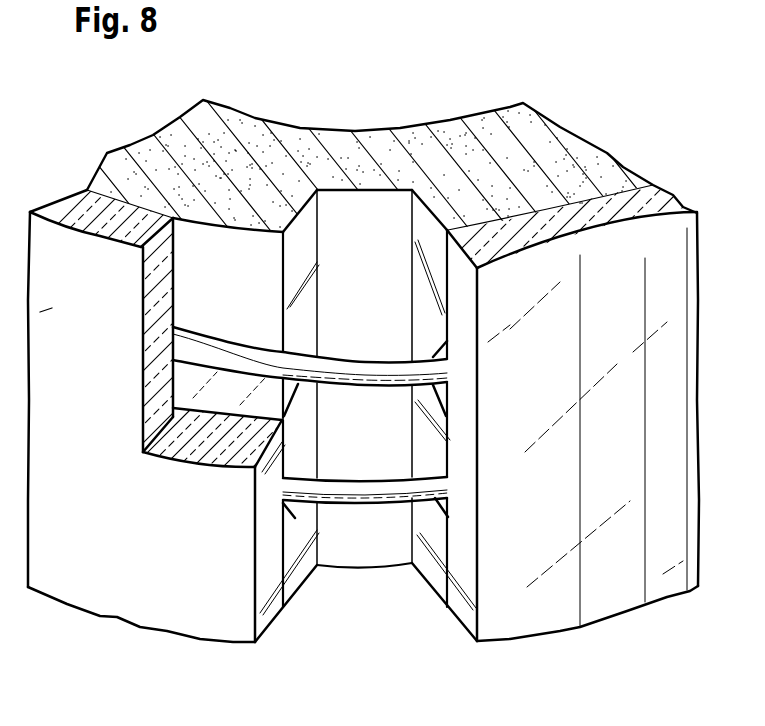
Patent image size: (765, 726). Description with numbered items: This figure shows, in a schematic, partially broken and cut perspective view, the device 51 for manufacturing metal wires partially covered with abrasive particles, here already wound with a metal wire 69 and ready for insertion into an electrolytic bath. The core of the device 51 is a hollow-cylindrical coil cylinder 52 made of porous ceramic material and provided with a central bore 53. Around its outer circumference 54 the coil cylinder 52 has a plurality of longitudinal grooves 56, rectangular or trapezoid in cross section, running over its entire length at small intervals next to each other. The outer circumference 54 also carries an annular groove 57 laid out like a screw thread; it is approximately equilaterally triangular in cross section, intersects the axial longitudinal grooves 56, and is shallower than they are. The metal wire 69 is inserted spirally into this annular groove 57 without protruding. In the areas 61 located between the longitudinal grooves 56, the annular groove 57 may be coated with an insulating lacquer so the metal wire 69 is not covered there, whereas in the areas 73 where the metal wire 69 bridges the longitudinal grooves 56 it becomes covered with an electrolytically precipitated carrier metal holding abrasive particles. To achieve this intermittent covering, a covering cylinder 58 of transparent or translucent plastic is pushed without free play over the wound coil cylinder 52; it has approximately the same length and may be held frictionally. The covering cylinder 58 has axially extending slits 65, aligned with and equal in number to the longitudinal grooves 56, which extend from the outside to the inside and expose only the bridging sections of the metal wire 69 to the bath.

The device 51 is at (518, 82).
The coil cylinder 52 is at (540, 147).
The central bore 53 is at (448, 120).
The outer circumference 54 is at (234, 243).
The longitudinal grooves 56 is at (370, 214).
The annular groove 57 is at (293, 423).
The covering cylinder 58 is at (76, 212).
The areas between the axial longitudinal grooves 61 is at (279, 344).
The slits 65 is at (468, 617).
The metal wire 69 is at (386, 356).
The areas where the wire crosses the longitudinal grooves 73 is at (358, 368).